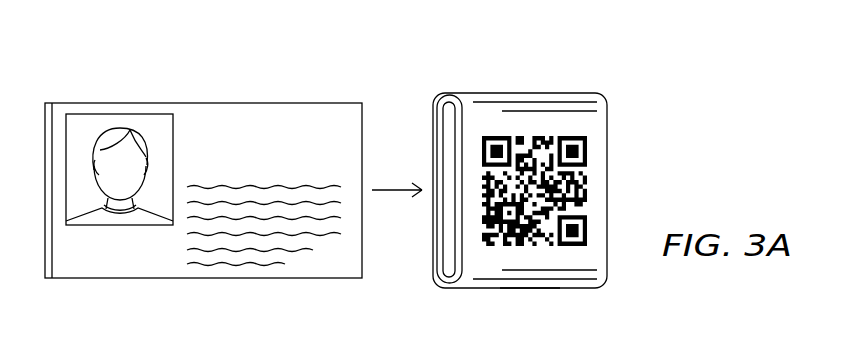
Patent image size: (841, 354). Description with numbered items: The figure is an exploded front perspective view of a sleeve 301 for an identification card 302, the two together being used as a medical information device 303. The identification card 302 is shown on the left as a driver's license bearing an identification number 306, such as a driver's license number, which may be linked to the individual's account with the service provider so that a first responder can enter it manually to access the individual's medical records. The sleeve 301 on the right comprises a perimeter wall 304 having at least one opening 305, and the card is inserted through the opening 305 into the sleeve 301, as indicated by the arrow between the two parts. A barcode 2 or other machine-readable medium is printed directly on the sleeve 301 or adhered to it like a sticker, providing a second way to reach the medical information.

The barcode 2 is at (588, 180).
The sleeve 301 is at (606, 128).
The identification card 302 is at (197, 103).
The medical information device 303 is at (356, 69).
The perimeter wall 304 is at (525, 288).
The opening 305 is at (448, 256).
The identification number 306 is at (352, 167).